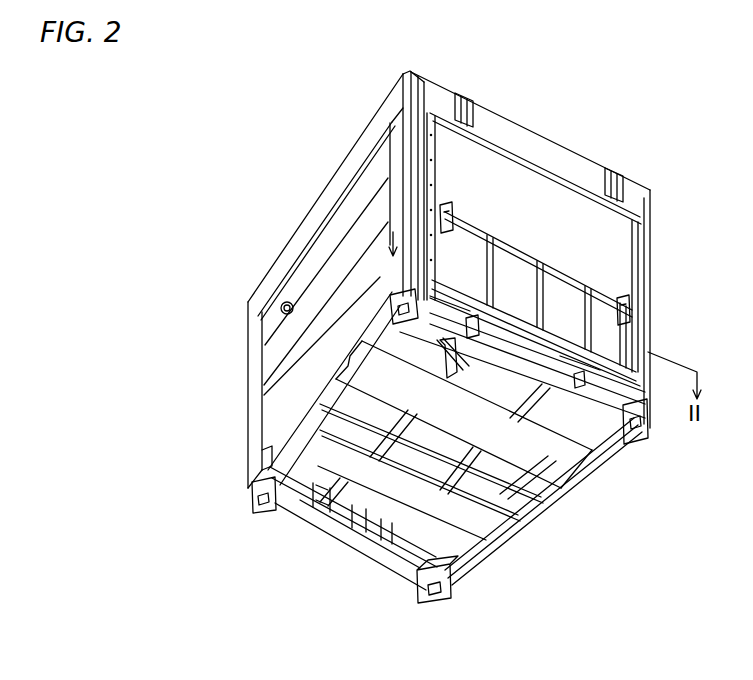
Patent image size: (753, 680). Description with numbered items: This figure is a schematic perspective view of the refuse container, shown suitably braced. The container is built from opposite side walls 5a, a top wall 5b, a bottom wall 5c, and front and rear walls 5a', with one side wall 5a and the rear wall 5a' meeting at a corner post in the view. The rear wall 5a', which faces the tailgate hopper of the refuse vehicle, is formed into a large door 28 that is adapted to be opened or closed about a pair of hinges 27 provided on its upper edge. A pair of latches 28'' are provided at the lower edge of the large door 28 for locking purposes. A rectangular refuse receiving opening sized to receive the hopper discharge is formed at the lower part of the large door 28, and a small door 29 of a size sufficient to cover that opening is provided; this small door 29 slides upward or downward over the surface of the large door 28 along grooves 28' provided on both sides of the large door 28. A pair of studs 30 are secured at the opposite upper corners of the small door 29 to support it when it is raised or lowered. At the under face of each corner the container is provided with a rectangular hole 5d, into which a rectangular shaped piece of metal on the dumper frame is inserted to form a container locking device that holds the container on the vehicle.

The side wall 5a is at (324, 305).
The rear wall 5a' is at (422, 166).
The top wall 5b is at (348, 158).
The bottom wall 5c is at (362, 397).
The rectangular hole 5d is at (398, 312).
The hinge 27 is at (465, 97).
The large door 28 is at (530, 250).
The groove 28' is at (532, 242).
The latch 28'' is at (541, 429).
The small door 29 is at (508, 300).
The stud 30 is at (449, 215).